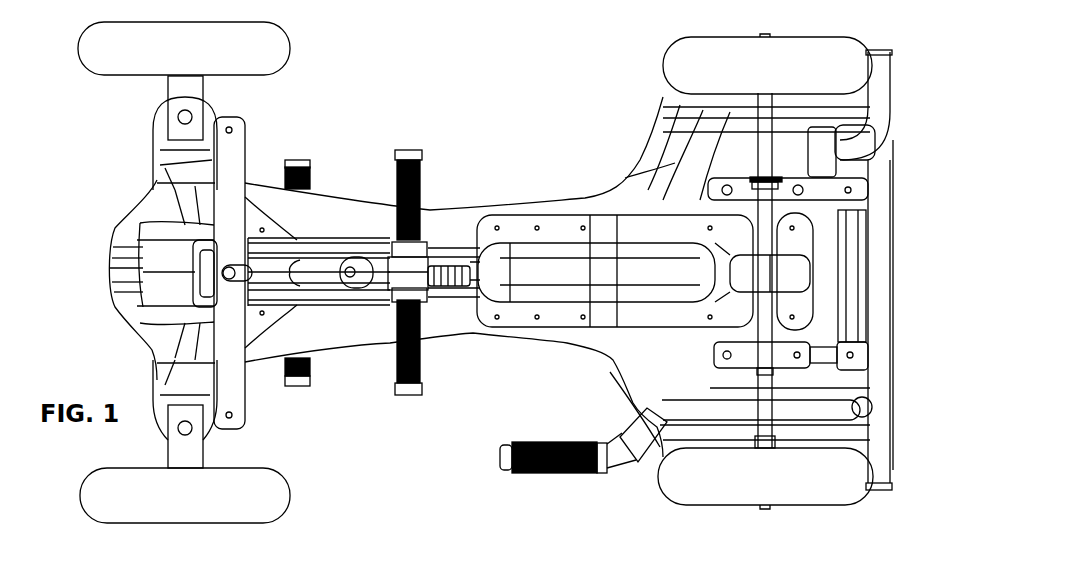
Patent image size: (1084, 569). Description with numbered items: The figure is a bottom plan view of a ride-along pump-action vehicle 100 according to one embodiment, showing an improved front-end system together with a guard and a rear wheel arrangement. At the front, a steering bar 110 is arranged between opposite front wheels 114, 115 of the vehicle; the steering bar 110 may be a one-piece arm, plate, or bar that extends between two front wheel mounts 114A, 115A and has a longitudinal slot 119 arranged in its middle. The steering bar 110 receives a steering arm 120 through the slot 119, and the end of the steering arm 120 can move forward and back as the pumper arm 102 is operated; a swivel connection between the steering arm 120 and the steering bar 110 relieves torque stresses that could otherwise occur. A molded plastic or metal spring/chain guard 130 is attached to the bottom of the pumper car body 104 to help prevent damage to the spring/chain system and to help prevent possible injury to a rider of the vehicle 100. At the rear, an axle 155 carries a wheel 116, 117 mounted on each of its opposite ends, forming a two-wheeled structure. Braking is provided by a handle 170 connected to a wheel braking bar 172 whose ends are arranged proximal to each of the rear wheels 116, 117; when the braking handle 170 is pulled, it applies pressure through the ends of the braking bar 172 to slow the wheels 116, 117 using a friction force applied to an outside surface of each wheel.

The ride-along pump-action vehicle 100 is at (120, 178).
The pumper arm 102 is at (423, 253).
The pumper car body 104 is at (472, 332).
The steering bar 110 is at (245, 370).
The front wheel 114 is at (290, 50).
The front wheel mount 114A is at (203, 97).
The front wheel 115 is at (290, 503).
The front wheel mount 115A is at (203, 450).
The rear wheel 116 is at (663, 58).
The rear wheel 117 is at (663, 483).
The longitudinal slot 119 is at (243, 277).
The steering arm 120 is at (288, 277).
The spring/chain guard 130 is at (520, 310).
The axle 155 is at (760, 167).
The braking handle 170 is at (512, 467).
The wheel braking bar 172 is at (890, 470).